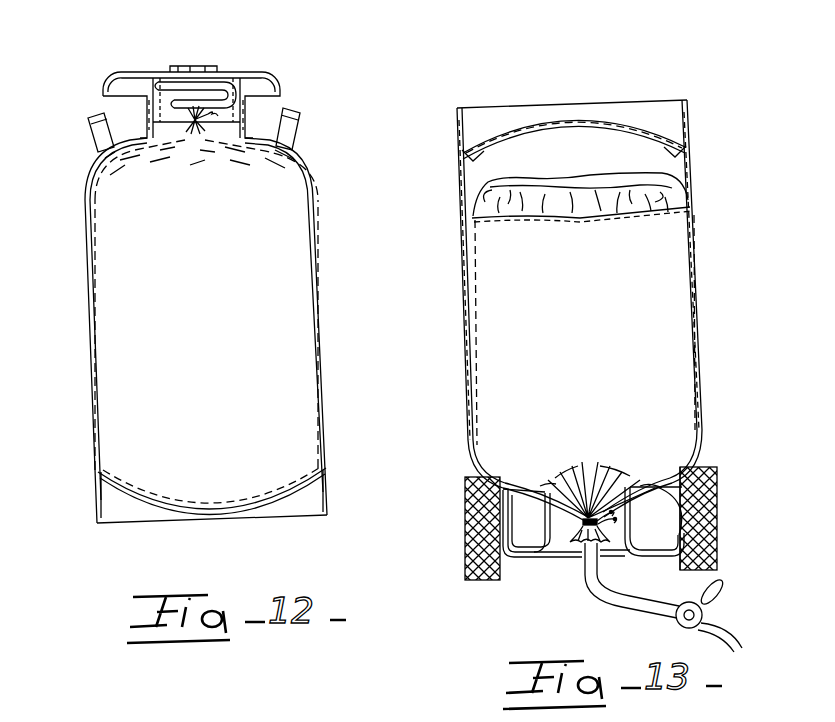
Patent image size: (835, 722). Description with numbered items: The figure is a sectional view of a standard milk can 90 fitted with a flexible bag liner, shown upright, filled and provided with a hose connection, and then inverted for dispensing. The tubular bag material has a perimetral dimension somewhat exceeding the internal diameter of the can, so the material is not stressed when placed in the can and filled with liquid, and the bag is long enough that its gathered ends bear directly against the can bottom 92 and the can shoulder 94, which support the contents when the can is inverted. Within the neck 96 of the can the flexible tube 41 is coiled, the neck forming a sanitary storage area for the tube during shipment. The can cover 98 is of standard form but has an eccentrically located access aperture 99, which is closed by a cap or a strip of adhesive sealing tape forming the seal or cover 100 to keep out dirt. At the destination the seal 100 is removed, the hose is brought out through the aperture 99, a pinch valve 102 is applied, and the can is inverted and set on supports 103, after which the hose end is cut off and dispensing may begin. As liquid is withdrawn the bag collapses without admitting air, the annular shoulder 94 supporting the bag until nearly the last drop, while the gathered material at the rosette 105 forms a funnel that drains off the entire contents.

In FIG. 12, the flexible tube 41 is at (218, 87).
In FIG. 12, the milk can 90 is at (88, 298).
In FIG. 13, the milk can 90 is at (463, 305).
In FIG. 12, the can bottom 92 is at (218, 510).
In FIG. 13, the can bottom 92 is at (618, 127).
In FIG. 12, the can shoulder 94 is at (262, 136).
In FIG. 13, the can shoulder 94 is at (718, 514).
In FIG. 12, the neck 96 is at (147, 110).
In FIG. 12, the can cover 98 is at (148, 72).
In FIG. 13, the can cover 98 is at (622, 556).
In FIG. 12, the access aperture 99 is at (190, 68).
In FIG. 13, the access aperture 99 is at (582, 560).
In FIG. 12, the seal or cover 100 is at (210, 65).
In FIG. 13, the pinch valve 102 is at (677, 614).
In FIG. 13, the supports 103 is at (468, 527).
In FIG. 13, the rosette 105 is at (530, 512).